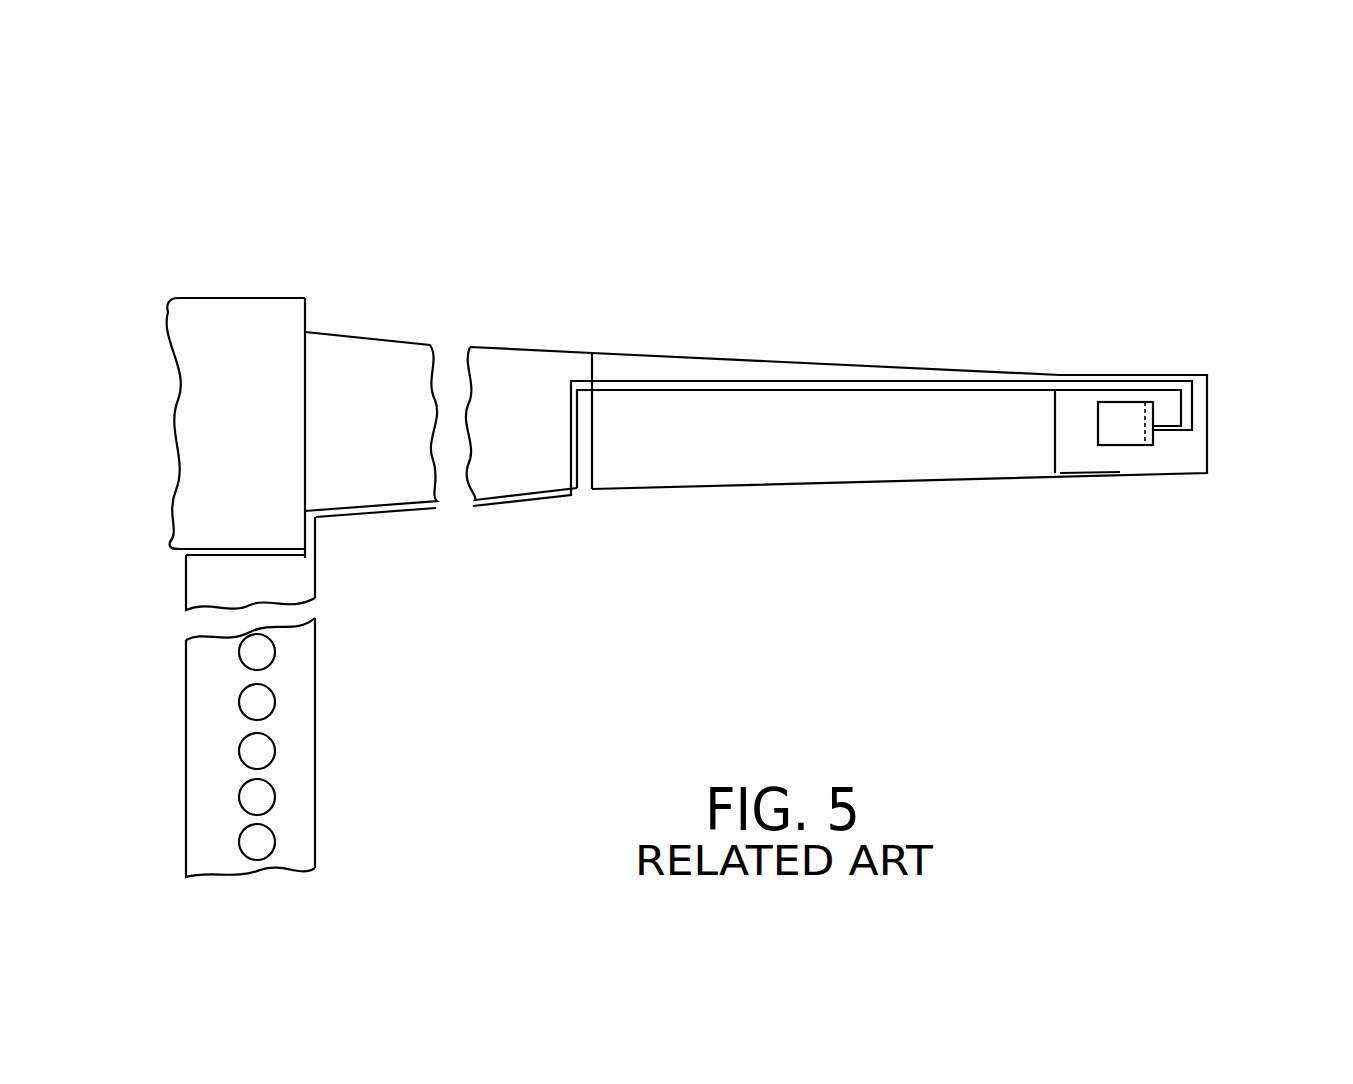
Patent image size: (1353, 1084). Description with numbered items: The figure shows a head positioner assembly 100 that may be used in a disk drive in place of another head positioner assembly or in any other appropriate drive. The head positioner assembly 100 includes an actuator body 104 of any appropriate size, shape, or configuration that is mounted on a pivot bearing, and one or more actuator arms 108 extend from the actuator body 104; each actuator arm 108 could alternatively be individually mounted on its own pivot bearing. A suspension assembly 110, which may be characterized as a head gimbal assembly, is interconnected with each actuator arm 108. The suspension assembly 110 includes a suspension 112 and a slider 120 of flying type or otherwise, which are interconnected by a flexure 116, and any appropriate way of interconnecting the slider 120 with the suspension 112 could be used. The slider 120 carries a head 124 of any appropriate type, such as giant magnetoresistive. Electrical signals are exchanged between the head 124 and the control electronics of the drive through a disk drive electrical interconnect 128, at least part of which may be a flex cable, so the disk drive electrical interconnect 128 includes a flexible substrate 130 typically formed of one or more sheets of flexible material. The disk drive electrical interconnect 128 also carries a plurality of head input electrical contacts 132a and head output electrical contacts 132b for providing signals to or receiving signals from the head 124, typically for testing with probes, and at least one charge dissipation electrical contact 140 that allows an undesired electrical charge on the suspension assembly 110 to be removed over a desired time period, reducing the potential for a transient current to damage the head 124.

The head positioner assembly 100 is at (905, 239).
The actuator body 104 is at (209, 298).
The actuator arm 108 is at (543, 347).
The suspension assembly 110 is at (1080, 348).
The suspension 112 is at (693, 357).
The flexure 116 is at (1093, 474).
The slider 120 is at (1097, 430).
The head 124 is at (1147, 446).
The disk drive electrical interconnect 128 is at (907, 381).
The flexible substrate 130 is at (298, 842).
The head input electrical contacts 132a is at (243, 711).
The head output electrical contacts 132b is at (240, 667).
The charge dissipation electrical contact 140 is at (240, 843).